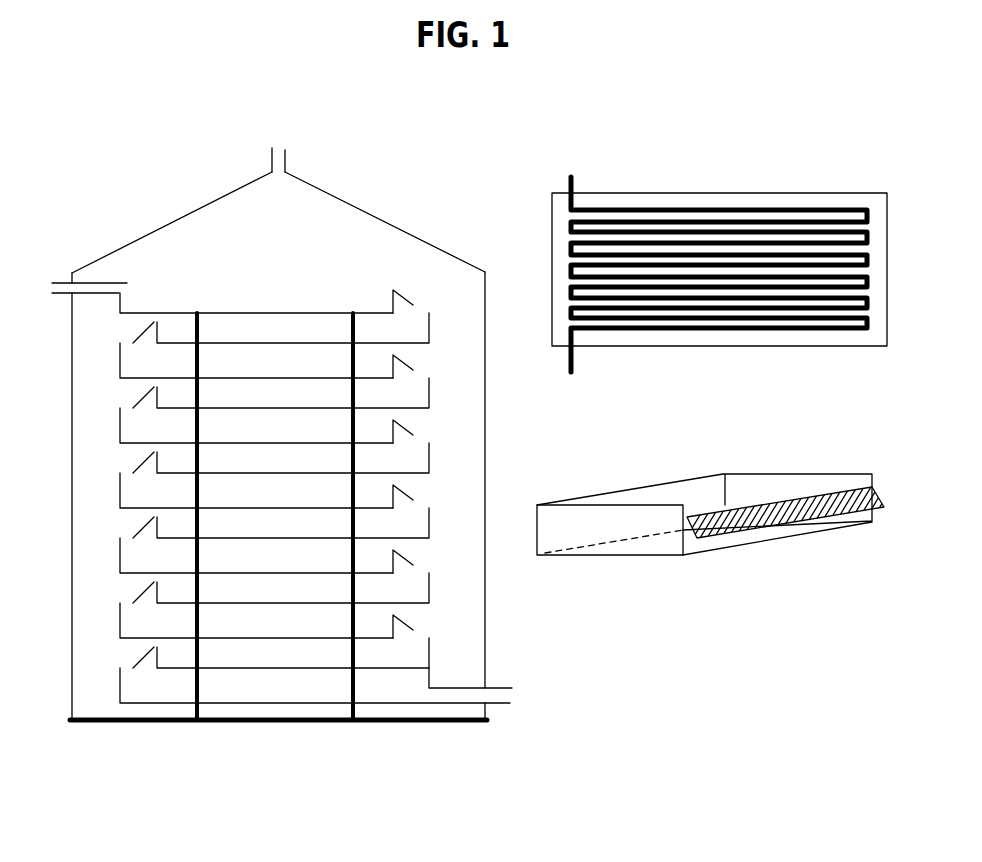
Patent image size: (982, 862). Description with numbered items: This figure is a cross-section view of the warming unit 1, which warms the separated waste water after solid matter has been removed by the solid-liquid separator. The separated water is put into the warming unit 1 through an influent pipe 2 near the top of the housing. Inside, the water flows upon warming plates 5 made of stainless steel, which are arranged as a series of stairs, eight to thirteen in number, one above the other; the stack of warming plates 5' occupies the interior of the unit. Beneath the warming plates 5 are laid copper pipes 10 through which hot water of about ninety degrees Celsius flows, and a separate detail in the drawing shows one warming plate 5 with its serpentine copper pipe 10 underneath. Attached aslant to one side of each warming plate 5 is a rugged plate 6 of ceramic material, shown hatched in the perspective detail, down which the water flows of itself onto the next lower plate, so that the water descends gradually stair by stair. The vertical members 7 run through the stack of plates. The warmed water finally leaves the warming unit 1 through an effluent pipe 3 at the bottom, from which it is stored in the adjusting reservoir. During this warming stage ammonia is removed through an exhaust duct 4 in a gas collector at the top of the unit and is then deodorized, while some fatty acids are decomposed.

The warming unit 1 is at (70, 632).
The influent pipe 2 is at (78, 287).
The effluent pipe 3 is at (481, 690).
The exhaust duct 4 is at (270, 156).
The warming plate 5 is at (712, 410).
The warming plates 5' is at (266, 498).
The rugged plate 6 is at (400, 303).
The heating pipes 7 is at (197, 488).
The copper pipe 10 is at (670, 330).